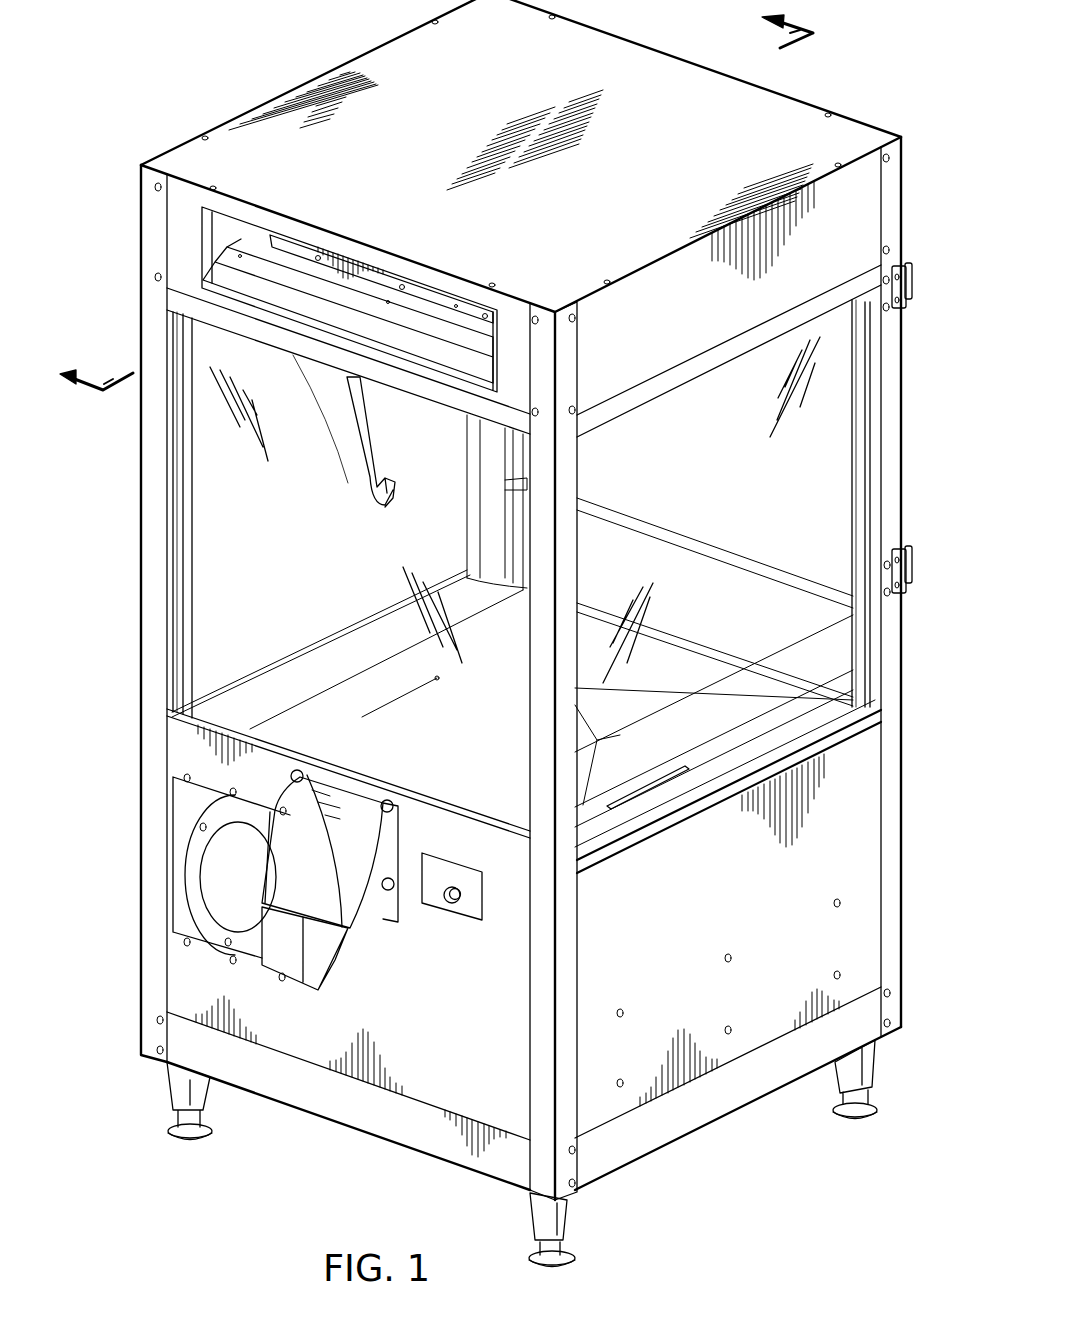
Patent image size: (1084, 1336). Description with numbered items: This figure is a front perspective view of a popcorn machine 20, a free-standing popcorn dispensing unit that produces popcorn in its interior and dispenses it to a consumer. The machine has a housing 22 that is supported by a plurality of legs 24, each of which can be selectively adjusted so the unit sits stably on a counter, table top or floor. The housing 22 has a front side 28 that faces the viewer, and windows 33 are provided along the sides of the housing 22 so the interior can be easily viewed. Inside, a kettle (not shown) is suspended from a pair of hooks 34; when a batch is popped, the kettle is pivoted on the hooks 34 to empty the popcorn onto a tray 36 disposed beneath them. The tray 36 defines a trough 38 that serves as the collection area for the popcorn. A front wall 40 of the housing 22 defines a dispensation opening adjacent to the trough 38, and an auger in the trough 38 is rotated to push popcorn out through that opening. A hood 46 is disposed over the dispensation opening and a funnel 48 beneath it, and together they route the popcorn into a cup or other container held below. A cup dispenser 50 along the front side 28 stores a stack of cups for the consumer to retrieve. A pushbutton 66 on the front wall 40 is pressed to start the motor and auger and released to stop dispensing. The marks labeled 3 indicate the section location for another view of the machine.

The popcorn machine 20 is at (219, 54).
The housing 22 is at (131, 679).
The legs 24 is at (170, 1086).
The front side 28 is at (325, 1041).
The windows 33 is at (208, 468).
The hooks 34 is at (330, 473).
The tray 36 is at (687, 693).
The trough 38 is at (607, 774).
The front wall 40 is at (458, 1083).
The hood 46 is at (360, 917).
The funnel 48 is at (290, 962).
The cup dispenser 50 is at (192, 858).
The pushbutton 66 is at (443, 903).
The section line 3 is at (427, 195).